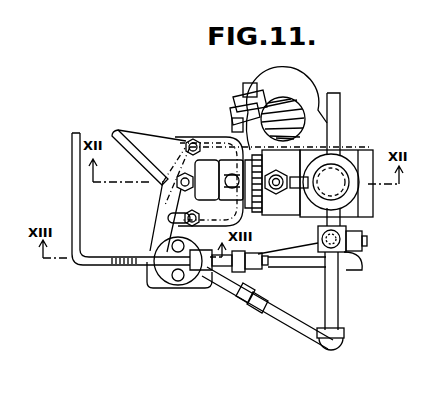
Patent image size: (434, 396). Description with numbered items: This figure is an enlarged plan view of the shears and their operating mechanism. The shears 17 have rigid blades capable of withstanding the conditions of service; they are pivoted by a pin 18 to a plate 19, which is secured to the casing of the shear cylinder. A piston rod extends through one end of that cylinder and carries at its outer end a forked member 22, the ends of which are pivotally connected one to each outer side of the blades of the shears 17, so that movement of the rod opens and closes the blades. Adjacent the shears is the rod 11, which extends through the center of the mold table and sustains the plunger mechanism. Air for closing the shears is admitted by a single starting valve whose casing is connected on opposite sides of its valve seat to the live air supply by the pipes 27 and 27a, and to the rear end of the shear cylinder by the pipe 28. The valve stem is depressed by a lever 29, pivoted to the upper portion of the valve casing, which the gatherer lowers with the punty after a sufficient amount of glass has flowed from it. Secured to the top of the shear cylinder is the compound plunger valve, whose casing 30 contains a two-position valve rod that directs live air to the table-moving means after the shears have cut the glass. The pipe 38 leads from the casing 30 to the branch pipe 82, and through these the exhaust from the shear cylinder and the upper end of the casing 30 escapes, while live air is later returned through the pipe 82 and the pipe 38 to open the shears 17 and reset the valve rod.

The rod 11 is at (290, 112).
The shears 17 is at (143, 131).
The pin 18 is at (167, 182).
The plate 19 is at (146, 282).
The forked member 22 is at (214, 148).
The pipe 27 is at (362, 235).
The pipe 27a is at (340, 250).
The pipe 28 is at (294, 263).
The lever 29 is at (72, 161).
The casing 30 is at (353, 193).
The pipe 38 is at (302, 238).
The branch pipe 82 is at (278, 177).